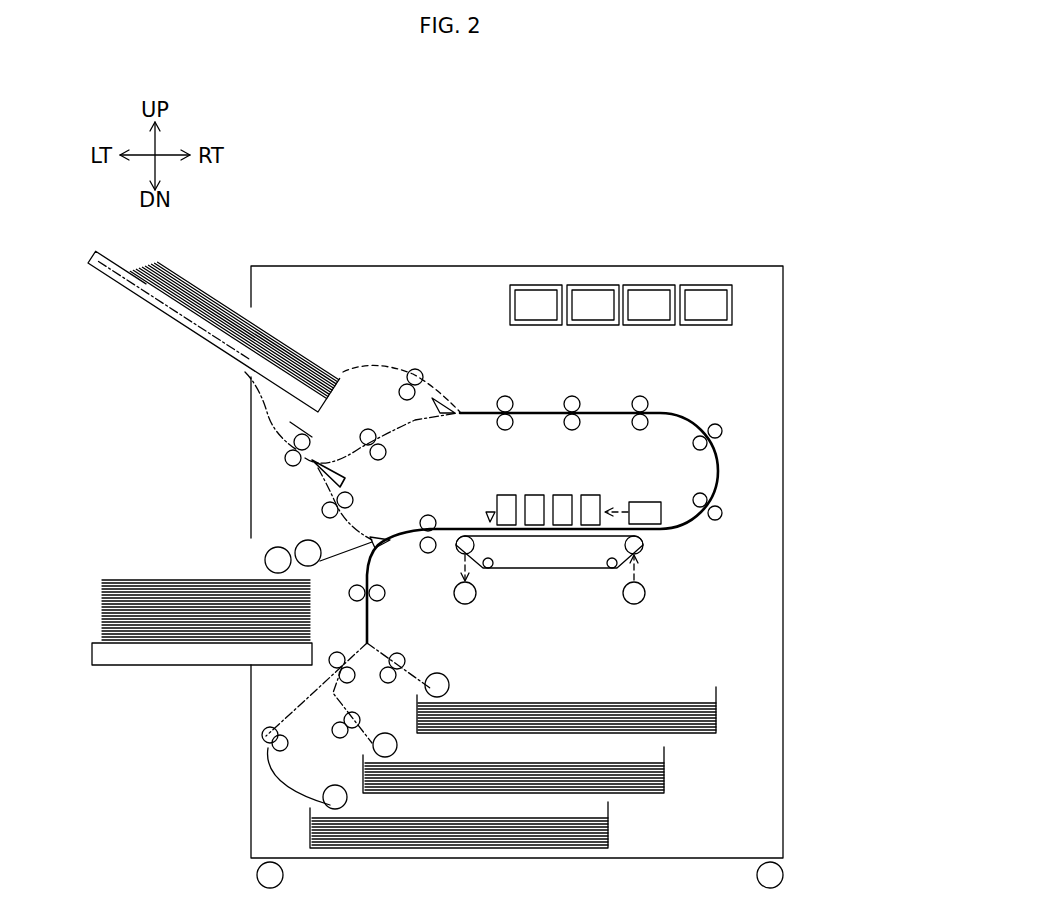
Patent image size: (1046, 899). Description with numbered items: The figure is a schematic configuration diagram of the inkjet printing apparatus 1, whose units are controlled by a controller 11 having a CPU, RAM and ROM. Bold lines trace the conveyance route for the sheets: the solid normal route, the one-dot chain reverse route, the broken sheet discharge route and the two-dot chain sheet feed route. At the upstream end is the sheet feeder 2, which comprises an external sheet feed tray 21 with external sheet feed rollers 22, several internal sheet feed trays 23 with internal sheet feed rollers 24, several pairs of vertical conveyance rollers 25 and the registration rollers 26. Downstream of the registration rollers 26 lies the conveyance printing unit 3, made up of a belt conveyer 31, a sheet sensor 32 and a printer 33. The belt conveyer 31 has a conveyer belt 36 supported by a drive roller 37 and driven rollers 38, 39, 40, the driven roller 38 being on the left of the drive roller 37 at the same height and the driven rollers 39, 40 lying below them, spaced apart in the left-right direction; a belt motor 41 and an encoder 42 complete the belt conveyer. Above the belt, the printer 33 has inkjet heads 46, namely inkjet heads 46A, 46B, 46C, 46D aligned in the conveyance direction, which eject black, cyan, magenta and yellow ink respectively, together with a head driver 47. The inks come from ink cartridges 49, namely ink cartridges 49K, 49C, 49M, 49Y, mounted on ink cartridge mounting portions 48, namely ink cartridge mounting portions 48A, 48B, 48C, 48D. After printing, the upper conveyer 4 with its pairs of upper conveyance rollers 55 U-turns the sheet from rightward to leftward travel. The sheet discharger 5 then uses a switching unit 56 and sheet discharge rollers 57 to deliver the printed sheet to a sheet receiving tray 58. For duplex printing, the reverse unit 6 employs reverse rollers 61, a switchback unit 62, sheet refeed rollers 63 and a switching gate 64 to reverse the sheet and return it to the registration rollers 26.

The inkjet printing apparatus 1 is at (757, 169).
The sheet feeder 2 is at (460, 634).
The conveyance printing unit 3 is at (633, 610).
The upper conveyer 4 is at (709, 405).
The sheet discharger 5 is at (446, 358).
The reverse unit 6 is at (247, 502).
The controller 11 is at (373, 266).
The external sheet feed tray 21 is at (169, 668).
The external sheet feed rollers 22 is at (265, 565).
The internal sheet feed trays 23 is at (718, 713).
The internal sheet feed rollers 24 is at (450, 686).
The pairs of vertical conveyance rollers 25 is at (383, 599).
The registration rollers 26 is at (423, 550).
The belt conveyer 31 is at (582, 583).
The sheet sensor 32 is at (483, 512).
The printer 33 is at (624, 498).
The conveyer belt 36 is at (554, 570).
The drive roller 37 is at (640, 546).
The driven roller 38 is at (459, 552).
The driven roller 39 is at (492, 566).
The driven roller 40 is at (607, 564).
The belt motor 41 is at (646, 593).
The encoder 42 is at (476, 593).
The inkjet heads 46 is at (540, 475).
The inkjet head 46A is at (505, 495).
The inkjet head 46B is at (536, 495).
The inkjet head 46C is at (562, 495).
The inkjet head 46D is at (589, 495).
The head driver 47 is at (662, 510).
The ink cartridge mounting portions 48 is at (621, 252).
The ink cartridge mounting portion 48A is at (532, 284).
The ink cartridge mounting portion 48B is at (589, 284).
The ink cartridge mounting portion 48C is at (646, 284).
The ink cartridge mounting portion 48D is at (706, 274).
The ink cartridges 49 is at (623, 341).
The ink cartridge 49K is at (539, 323).
The ink cartridge 49C is at (596, 323).
The ink cartridge 49M is at (652, 323).
The ink cartridge 49Y is at (708, 326).
The pairs of upper conveyance rollers 55 is at (370, 438).
The switching unit 56 is at (446, 408).
The sheet discharge rollers 57 is at (412, 374).
The sheet receiving tray 58 is at (120, 290).
The reverse rollers 61 is at (286, 447).
The switchback unit 62 is at (291, 417).
The sheet refeed rollers 63 is at (332, 508).
The switching gate 64 is at (319, 482).